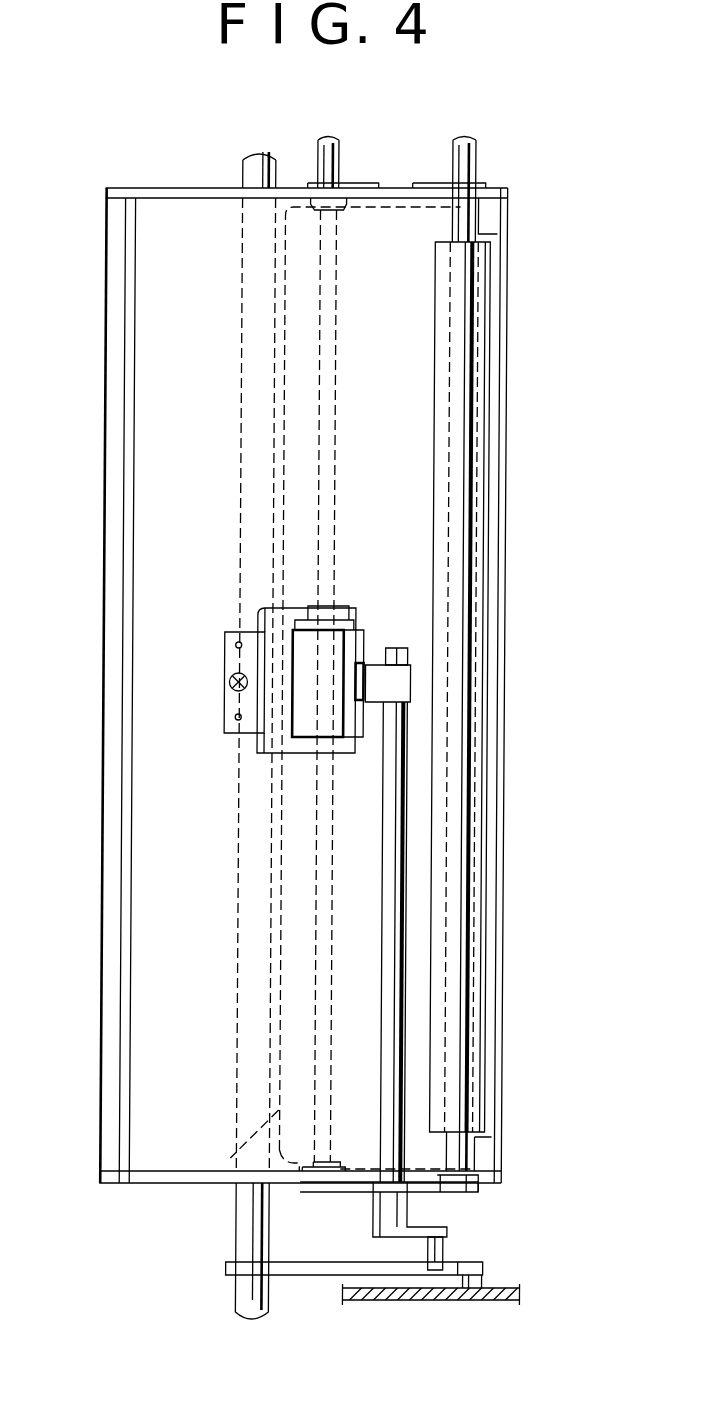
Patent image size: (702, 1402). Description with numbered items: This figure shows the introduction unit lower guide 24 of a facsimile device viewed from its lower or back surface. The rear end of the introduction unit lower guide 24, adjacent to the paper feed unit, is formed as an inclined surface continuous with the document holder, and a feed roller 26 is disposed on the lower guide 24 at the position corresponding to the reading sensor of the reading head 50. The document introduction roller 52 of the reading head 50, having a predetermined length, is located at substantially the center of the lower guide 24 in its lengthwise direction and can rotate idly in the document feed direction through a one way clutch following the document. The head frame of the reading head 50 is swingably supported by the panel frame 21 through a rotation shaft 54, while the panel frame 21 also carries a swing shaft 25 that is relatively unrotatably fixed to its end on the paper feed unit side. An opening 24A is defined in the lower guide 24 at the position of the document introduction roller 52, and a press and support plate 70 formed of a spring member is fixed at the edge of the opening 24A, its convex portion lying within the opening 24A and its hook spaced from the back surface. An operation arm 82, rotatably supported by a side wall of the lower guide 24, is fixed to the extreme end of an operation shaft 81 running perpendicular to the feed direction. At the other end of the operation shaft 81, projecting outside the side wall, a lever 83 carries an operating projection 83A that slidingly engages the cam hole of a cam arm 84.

The panel frame 21 is at (376, 1302).
The introduction unit lower guide 24 is at (150, 697).
The opening 24A is at (260, 617).
The swing shaft 25 is at (245, 170).
The feed roller 26 is at (487, 481).
The reading head 50 is at (226, 1186).
The document introduction roller 52 is at (305, 740).
The rotation shaft 54 is at (340, 160).
The press and support plate 70 is at (226, 712).
The operation shaft 81 is at (384, 897).
The operation arm 82 is at (372, 657).
The lever 83 is at (420, 1228).
The operating projection 83A is at (448, 1257).
The cam arm 84 is at (313, 1260).